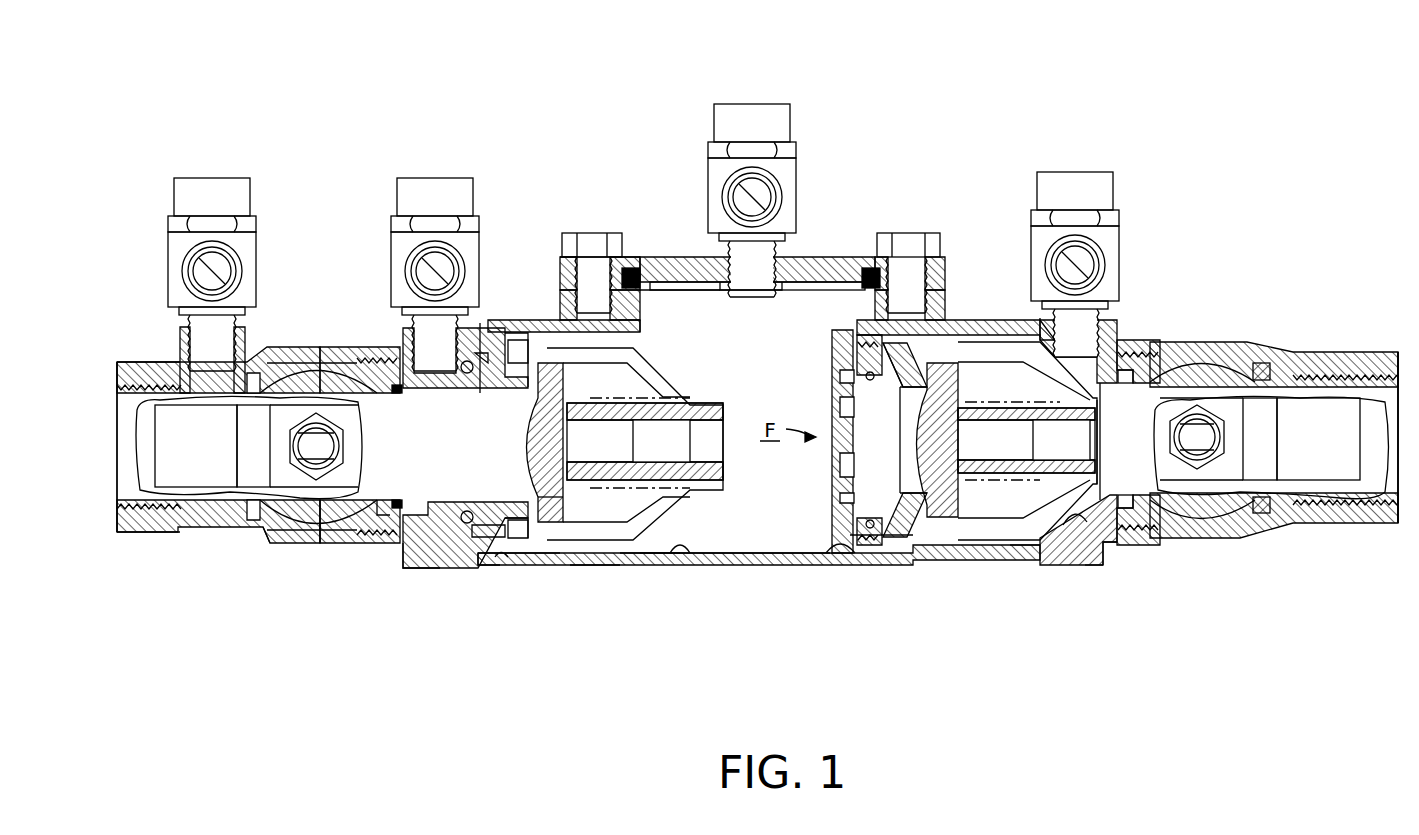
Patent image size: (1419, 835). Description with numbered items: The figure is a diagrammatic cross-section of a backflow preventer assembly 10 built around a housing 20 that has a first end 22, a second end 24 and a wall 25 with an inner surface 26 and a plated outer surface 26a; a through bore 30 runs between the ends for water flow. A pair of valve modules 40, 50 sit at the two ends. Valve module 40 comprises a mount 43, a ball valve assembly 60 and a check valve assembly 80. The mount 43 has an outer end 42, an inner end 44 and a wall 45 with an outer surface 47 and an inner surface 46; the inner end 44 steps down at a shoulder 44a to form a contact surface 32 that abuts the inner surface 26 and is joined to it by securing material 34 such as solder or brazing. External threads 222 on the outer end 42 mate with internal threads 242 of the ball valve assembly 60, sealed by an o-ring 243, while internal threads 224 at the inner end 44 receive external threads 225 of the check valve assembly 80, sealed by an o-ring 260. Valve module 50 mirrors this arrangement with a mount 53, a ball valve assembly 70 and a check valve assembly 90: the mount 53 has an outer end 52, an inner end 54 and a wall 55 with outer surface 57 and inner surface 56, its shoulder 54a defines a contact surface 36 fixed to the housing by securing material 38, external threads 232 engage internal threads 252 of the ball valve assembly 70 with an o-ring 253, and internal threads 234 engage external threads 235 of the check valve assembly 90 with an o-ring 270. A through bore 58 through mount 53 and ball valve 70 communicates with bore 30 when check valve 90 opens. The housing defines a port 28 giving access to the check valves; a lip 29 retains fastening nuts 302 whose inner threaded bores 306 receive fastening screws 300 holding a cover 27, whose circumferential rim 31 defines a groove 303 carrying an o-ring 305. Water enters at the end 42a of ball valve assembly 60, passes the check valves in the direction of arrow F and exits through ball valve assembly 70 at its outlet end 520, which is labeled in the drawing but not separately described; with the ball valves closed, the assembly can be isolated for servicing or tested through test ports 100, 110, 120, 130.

The backflow preventer assembly 10 is at (650, 122).
The valve module 40 is at (330, 172).
The valve module 50 is at (1248, 212).
The ball valve assembly 60 is at (280, 543).
The end of ball valve assembly 42a is at (130, 532).
The outer end 42 is at (340, 368).
The external threads 222 is at (370, 358).
The o-ring 243 is at (396, 488).
The internal threads 242 is at (360, 542).
The wall 45 is at (376, 540).
The test port 100 is at (222, 186).
The test port 120 is at (430, 187).
The test port 110 is at (772, 108).
The test port 130 is at (1083, 188).
The inner surface 46 is at (413, 497).
The outer surface 47 is at (405, 571).
The shoulder 44a is at (465, 560).
The internal threads 224 is at (475, 388).
The o-ring 260 is at (472, 506).
The mount 43 is at (489, 320).
The first end 22 is at (487, 567).
The contact surface 32 is at (512, 565).
The securing material 34 is at (548, 565).
The housing 20 is at (745, 567).
The wall 25 is at (648, 567).
The outer surface 26a is at (595, 567).
The inner surface 26 is at (682, 543).
The through bore 30 is at (736, 514).
The securing material 38 is at (830, 547).
The cover 27 is at (815, 256).
The port 28 is at (737, 312).
The circumferential rim 31 is at (662, 292).
The threaded fastening screws 300 is at (574, 233).
The lip 29 is at (612, 262).
The groove 303 is at (632, 268).
The fastening nuts 302 is at (567, 300).
The inner threaded bore 306 is at (905, 282).
The o-ring 305 is at (870, 268).
The inner end 44 is at (565, 381).
The external threads 225 is at (565, 511).
The check valve assembly 80 is at (672, 512).
The external threads 235 is at (830, 378).
The inner end 54 is at (836, 329).
The internal threads 234 is at (882, 560).
The o-ring 270 is at (828, 500).
The contact surface 36 is at (922, 566).
The shoulder 54a is at (1030, 562).
The second end 24 is at (1000, 562).
The inner surface 56 is at (1073, 514).
The outer surface 57 is at (1095, 567).
The wall 55 is at (1108, 563).
The through bore 58 is at (1108, 470).
The o-ring 253 is at (1128, 388).
The check valve assembly 90 is at (975, 340).
The mount 53 is at (1040, 335).
The internal threads 252 is at (1135, 342).
The external threads 232 is at (1143, 530).
The ball valve assembly 70 is at (1218, 343).
The outlet threads 520 is at (1348, 526).
The outer end 52 is at (1160, 532).